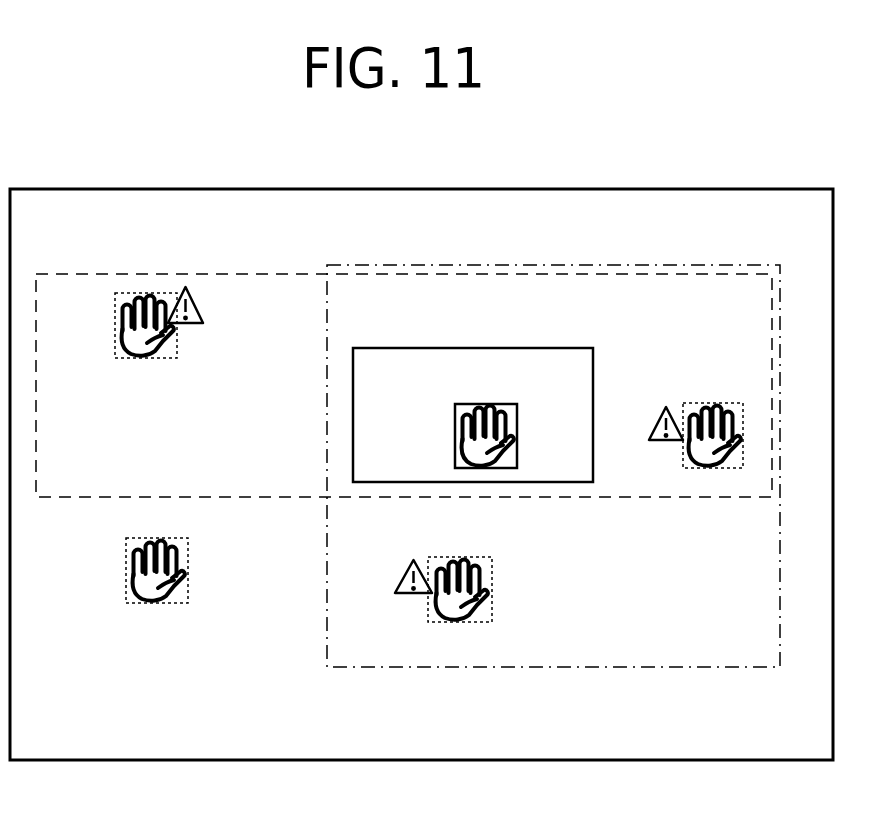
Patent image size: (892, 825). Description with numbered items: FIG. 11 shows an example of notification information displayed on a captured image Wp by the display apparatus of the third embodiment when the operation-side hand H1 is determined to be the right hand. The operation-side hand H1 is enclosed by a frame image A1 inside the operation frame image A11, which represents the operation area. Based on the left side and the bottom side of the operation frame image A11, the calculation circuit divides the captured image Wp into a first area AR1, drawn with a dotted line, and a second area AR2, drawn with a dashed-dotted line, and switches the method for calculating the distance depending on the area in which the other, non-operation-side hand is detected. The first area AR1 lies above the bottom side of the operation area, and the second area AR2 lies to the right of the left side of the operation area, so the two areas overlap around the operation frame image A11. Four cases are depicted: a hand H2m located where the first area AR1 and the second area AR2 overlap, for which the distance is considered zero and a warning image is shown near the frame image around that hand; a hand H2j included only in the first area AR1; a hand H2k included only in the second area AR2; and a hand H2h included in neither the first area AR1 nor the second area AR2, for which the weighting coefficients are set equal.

The captured image Wp is at (76, 189).
The first area AR1 is at (86, 274).
The second area AR2 is at (668, 668).
The operation frame image A11 is at (400, 348).
The frame image A1 is at (455, 436).
The operation-side hand H1 is at (457, 413).
The hand H2j is at (192, 351).
The hand H2h is at (116, 600).
The hand H2m is at (674, 413).
The hand H2k is at (419, 580).